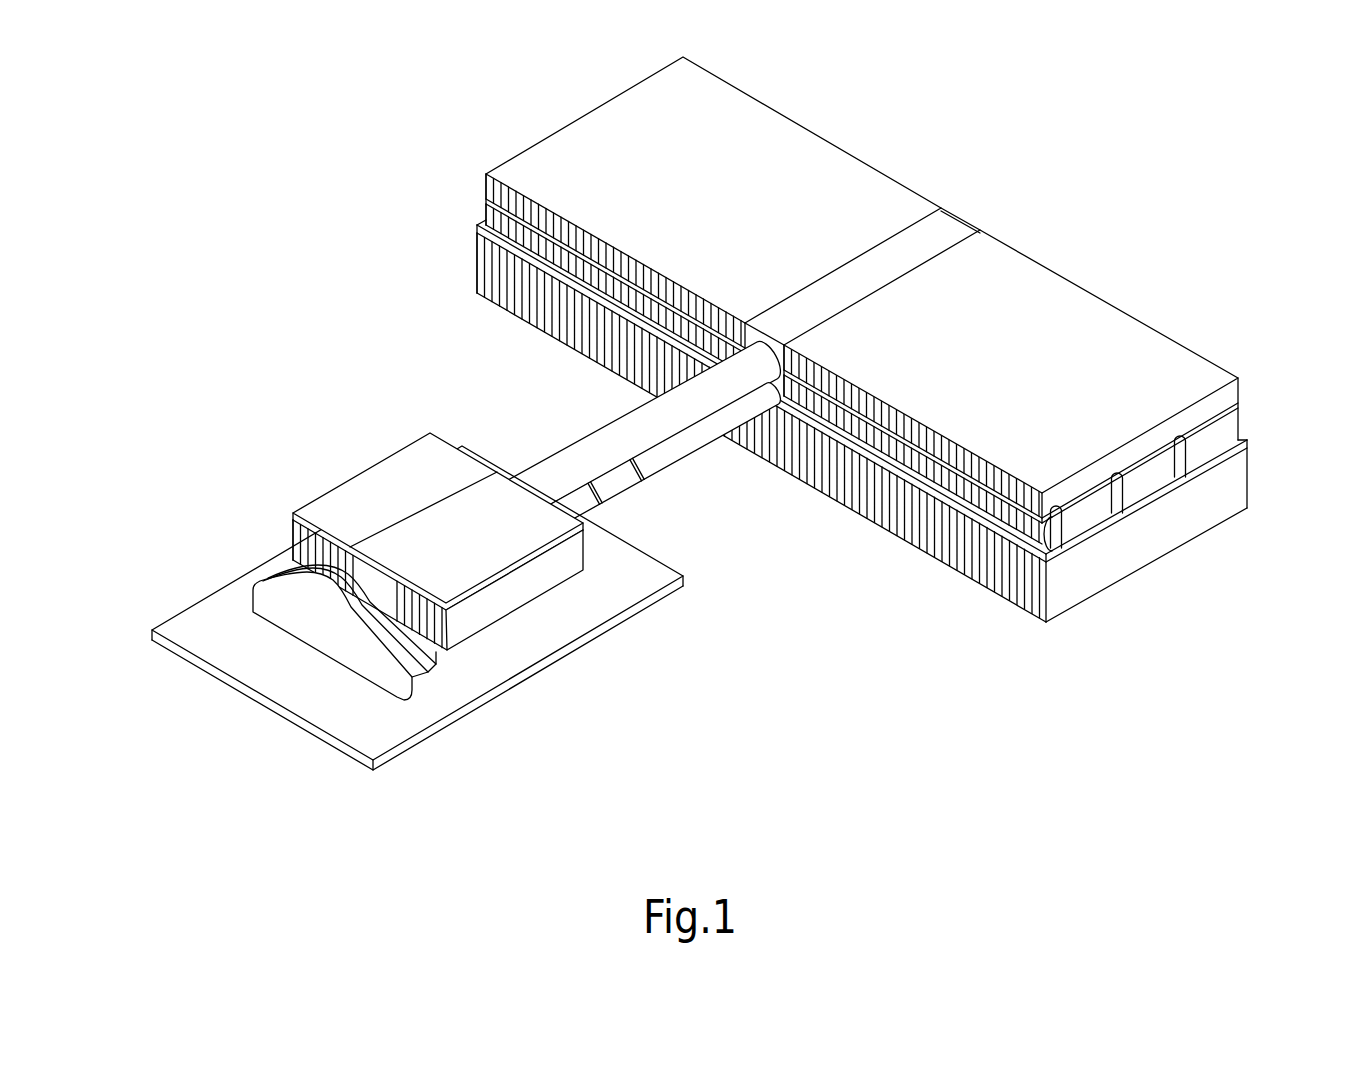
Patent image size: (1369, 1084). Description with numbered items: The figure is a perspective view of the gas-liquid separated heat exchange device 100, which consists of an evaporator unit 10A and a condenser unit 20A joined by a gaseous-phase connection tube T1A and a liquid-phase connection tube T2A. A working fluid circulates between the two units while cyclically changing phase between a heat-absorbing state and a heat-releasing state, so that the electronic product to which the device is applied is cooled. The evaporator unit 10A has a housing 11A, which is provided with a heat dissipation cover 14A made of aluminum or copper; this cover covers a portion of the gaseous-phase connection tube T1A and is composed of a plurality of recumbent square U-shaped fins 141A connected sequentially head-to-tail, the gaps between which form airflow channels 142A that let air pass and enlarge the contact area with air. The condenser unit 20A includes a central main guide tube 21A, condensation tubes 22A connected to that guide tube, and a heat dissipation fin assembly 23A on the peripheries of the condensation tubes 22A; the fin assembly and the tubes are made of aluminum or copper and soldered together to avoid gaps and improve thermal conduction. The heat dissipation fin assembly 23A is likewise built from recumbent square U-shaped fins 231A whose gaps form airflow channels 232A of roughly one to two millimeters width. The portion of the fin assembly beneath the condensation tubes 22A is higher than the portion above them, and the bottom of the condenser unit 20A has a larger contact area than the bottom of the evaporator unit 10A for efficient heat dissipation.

The gas-liquid separated heat exchange device 100 is at (1230, 117).
The evaporator unit 10A is at (262, 707).
The housing 11A is at (323, 625).
The heat dissipation cover 14A is at (540, 594).
The recumbent square U-shaped fins 141A is at (527, 580).
The airflow channels 142A is at (300, 545).
The condenser unit 20A is at (761, 339).
The central main guide tube 21A is at (925, 237).
The condensation tube 22A is at (1147, 480).
The heat dissipation fin assembly 23A is at (609, 331).
The recumbent square U-shaped fins 231A is at (486, 181).
The airflow channels 232A is at (486, 194).
The gaseous-phase connection tube T1A is at (620, 425).
The liquid-phase connection tube T2A is at (675, 445).